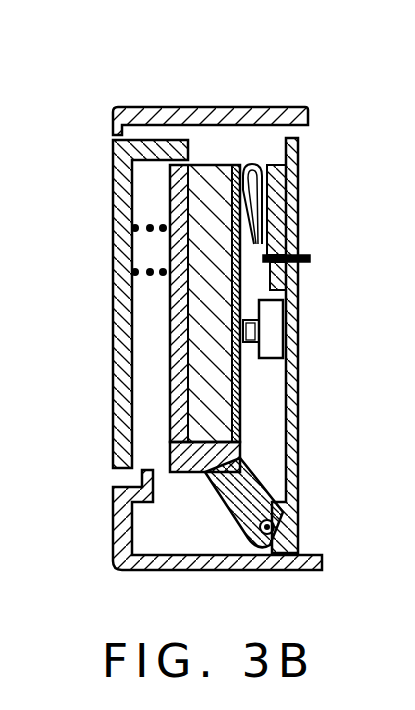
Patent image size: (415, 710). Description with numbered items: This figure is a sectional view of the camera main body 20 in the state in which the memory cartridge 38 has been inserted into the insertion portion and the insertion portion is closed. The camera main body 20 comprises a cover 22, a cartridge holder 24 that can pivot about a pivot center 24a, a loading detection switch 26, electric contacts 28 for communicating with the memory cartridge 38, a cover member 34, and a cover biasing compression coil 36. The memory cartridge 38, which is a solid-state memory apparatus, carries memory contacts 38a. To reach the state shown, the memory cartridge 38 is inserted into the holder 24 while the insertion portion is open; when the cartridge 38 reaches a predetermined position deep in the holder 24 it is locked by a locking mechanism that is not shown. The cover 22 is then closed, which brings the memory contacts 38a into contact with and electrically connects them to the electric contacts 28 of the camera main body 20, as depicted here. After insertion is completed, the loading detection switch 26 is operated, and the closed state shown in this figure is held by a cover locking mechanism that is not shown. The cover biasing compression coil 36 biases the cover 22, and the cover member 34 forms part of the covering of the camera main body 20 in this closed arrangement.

The camera main body 20 is at (219, 96).
The cover 22 is at (120, 203).
The cartridge holder 24 is at (176, 353).
The pivot center 24a is at (275, 527).
The loading detection switch 26 is at (252, 345).
The electric contacts 28 is at (254, 166).
The cover member 34 is at (176, 107).
The cover biasing compression coil 36 is at (148, 275).
The memory cartridge 38 is at (200, 410).
The memory contacts 38a is at (236, 162).